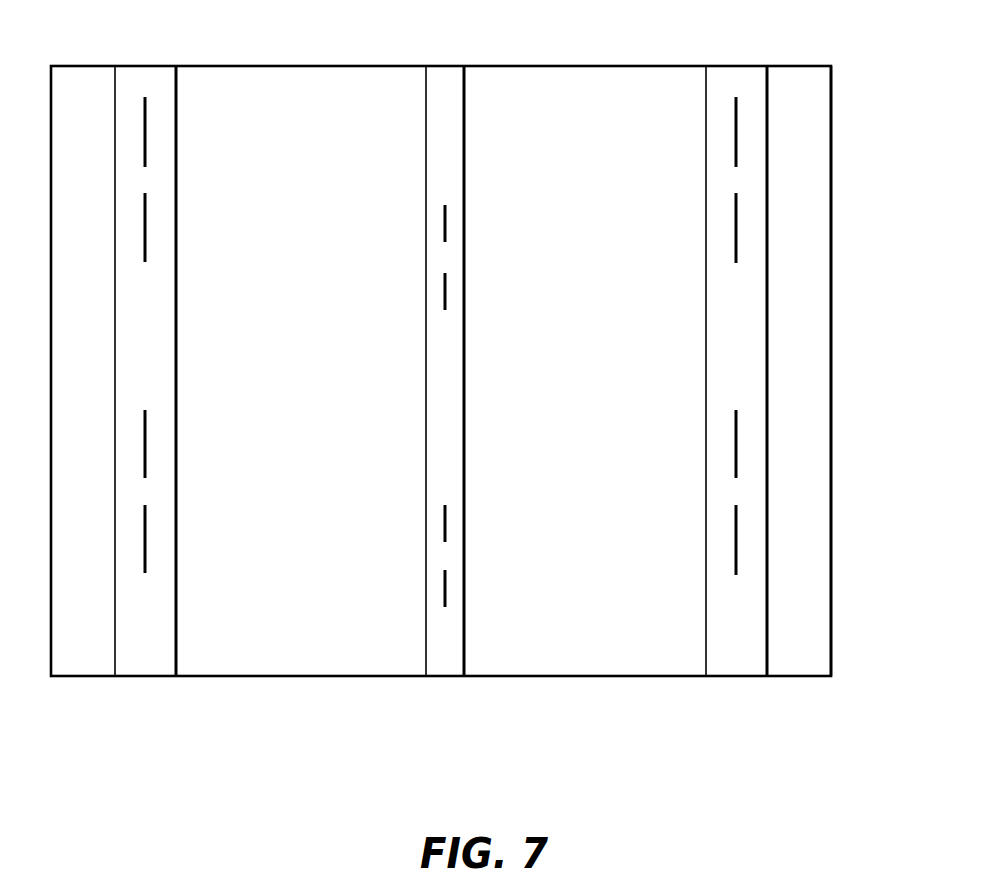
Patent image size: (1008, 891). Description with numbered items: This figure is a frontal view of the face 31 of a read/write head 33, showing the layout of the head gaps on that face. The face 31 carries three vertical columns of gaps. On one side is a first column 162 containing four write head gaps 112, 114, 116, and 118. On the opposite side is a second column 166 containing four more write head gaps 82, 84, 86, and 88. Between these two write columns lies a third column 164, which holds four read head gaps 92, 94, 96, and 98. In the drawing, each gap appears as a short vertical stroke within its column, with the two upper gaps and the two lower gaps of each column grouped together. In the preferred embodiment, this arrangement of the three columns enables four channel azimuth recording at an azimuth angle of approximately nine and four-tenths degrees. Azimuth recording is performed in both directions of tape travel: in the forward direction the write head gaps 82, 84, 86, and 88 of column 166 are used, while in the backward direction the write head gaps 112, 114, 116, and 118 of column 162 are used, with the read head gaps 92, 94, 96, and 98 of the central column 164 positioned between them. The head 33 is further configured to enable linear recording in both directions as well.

The face 31 is at (670, 652).
The read/write head 33 is at (832, 80).
The second column 166 is at (140, 66).
The third column 164 is at (448, 66).
The first column 162 is at (722, 66).
The write head gap 82 is at (146, 143).
The write head gap 84 is at (146, 237).
The write head gap 86 is at (146, 433).
The write head gap 88 is at (146, 545).
The read head gap 92 is at (446, 223).
The read head gap 94 is at (446, 295).
The read head gap 96 is at (446, 528).
The read head gap 98 is at (446, 594).
The write head gap 112 is at (737, 133).
The write head gap 114 is at (737, 237).
The write head gap 116 is at (737, 452).
The write head gap 118 is at (737, 549).